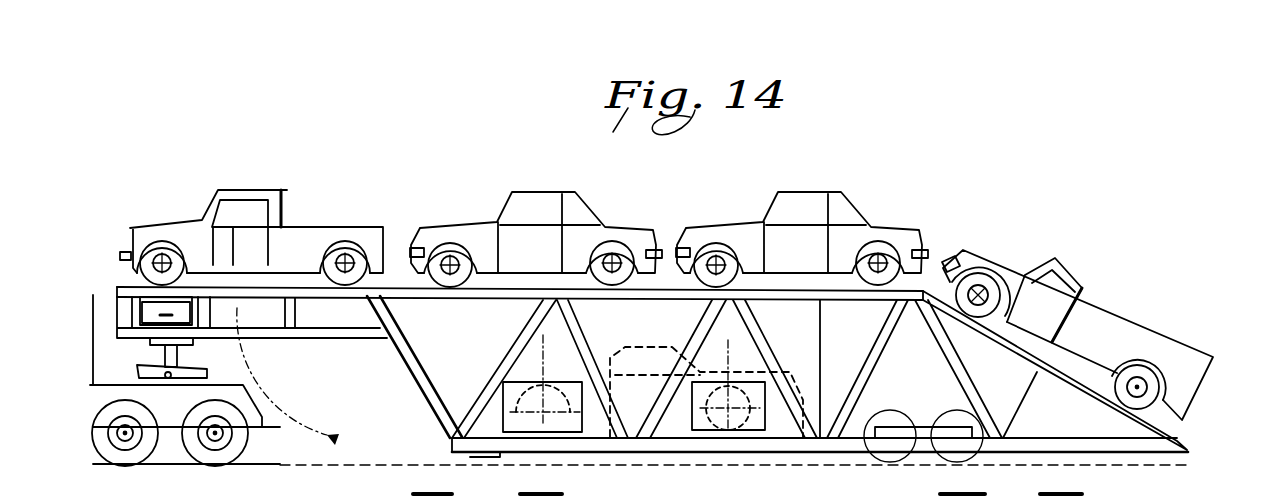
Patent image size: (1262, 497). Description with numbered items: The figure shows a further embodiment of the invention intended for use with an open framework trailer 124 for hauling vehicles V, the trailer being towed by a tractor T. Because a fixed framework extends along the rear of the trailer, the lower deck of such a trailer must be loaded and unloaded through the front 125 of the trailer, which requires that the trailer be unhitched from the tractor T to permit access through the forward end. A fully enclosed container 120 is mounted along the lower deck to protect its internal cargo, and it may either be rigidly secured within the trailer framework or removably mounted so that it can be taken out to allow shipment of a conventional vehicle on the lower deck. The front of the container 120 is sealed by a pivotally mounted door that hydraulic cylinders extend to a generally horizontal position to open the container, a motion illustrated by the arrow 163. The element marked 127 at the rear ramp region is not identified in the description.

The container 120 is at (450, 362).
The open framework trailer 124 is at (442, 451).
The front of the trailer 125 is at (428, 408).
The arrow 163 is at (331, 437).
The loading ramp 127 is at (1160, 432).
The tractor T is at (192, 458).
The vehicles V is at (380, 178).